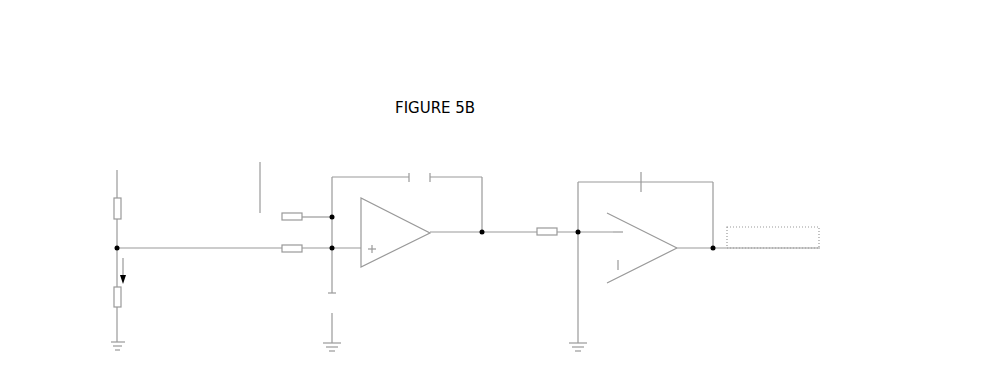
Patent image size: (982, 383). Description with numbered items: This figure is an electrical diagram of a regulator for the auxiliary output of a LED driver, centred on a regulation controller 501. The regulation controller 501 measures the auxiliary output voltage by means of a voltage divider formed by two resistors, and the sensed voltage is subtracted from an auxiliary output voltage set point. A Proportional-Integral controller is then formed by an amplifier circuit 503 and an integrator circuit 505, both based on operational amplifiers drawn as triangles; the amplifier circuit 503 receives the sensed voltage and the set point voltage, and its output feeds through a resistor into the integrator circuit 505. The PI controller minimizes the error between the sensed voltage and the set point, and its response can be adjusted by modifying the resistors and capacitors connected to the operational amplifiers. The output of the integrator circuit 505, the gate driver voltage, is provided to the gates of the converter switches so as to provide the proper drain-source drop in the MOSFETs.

The regulation controller 501 is at (612, 93).
The amplifier circuit 503 is at (398, 267).
The integrator circuit 505 is at (645, 278).